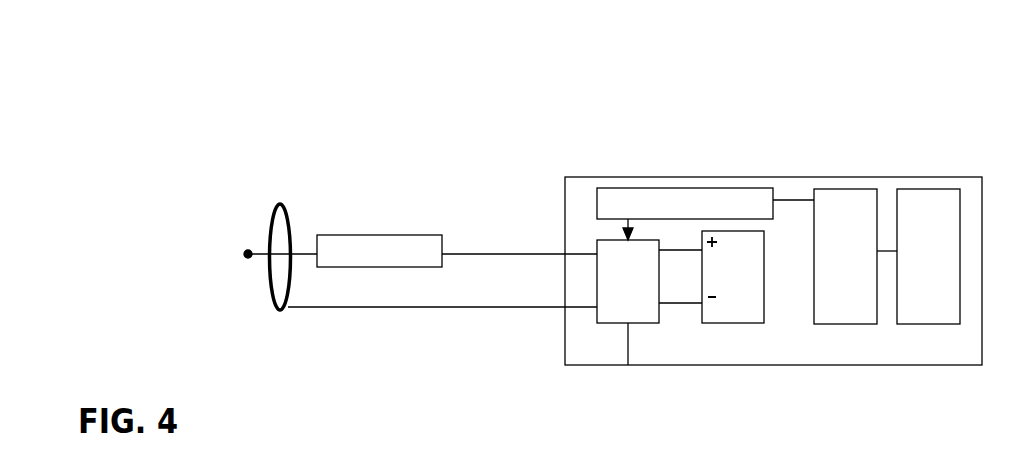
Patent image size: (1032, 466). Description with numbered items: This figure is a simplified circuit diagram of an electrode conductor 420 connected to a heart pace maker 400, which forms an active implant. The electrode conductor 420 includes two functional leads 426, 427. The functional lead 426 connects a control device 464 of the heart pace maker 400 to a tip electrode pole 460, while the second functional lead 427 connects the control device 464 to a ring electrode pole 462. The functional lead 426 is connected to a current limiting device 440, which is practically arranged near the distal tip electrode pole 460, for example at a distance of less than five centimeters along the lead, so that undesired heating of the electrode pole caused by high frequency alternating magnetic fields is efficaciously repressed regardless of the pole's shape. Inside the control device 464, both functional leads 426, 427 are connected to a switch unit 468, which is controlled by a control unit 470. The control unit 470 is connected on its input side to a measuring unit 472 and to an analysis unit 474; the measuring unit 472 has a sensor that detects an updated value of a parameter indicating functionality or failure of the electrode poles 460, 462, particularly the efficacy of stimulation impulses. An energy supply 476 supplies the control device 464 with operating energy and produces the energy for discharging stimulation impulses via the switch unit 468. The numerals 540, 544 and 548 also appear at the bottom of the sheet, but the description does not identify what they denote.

The heart pace maker 400 is at (846, 128).
The electrode conductor 420 is at (286, 190).
The functional lead 426 is at (485, 258).
The second functional lead 427 is at (550, 307).
The current limiting device 440 is at (342, 235).
The tip electrode pole 460 is at (244, 258).
The ring electrode pole 462 is at (278, 308).
The control device 464 is at (587, 177).
The switch unit 468 is at (640, 323).
The control unit 470 is at (667, 190).
The measuring unit 472 is at (920, 324).
The analysis unit 474 is at (829, 324).
The energy supply 476 is at (723, 323).
The component 540 is at (585, 465).
The component 544 is at (392, 465).
The component 548 is at (291, 465).